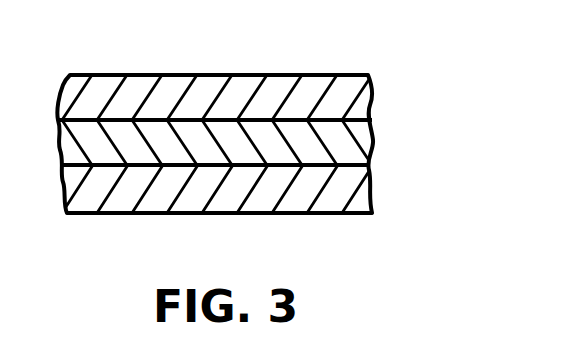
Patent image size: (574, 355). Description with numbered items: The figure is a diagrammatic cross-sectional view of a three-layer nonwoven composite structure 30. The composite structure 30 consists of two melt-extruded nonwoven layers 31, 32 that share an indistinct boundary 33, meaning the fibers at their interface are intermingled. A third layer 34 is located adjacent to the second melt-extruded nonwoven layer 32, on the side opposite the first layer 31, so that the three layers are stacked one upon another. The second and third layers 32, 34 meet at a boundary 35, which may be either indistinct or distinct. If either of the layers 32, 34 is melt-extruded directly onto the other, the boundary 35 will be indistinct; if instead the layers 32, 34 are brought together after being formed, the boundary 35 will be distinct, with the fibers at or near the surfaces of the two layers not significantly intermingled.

The composite structure 30 is at (253, 158).
The melt-extruded nonwoven layer 31 is at (369, 90).
The melt-extruded nonwoven layer 32 is at (372, 142).
The indistinct boundary 33 is at (372, 122).
The third layer 34 is at (375, 200).
The boundary 35 is at (371, 165).